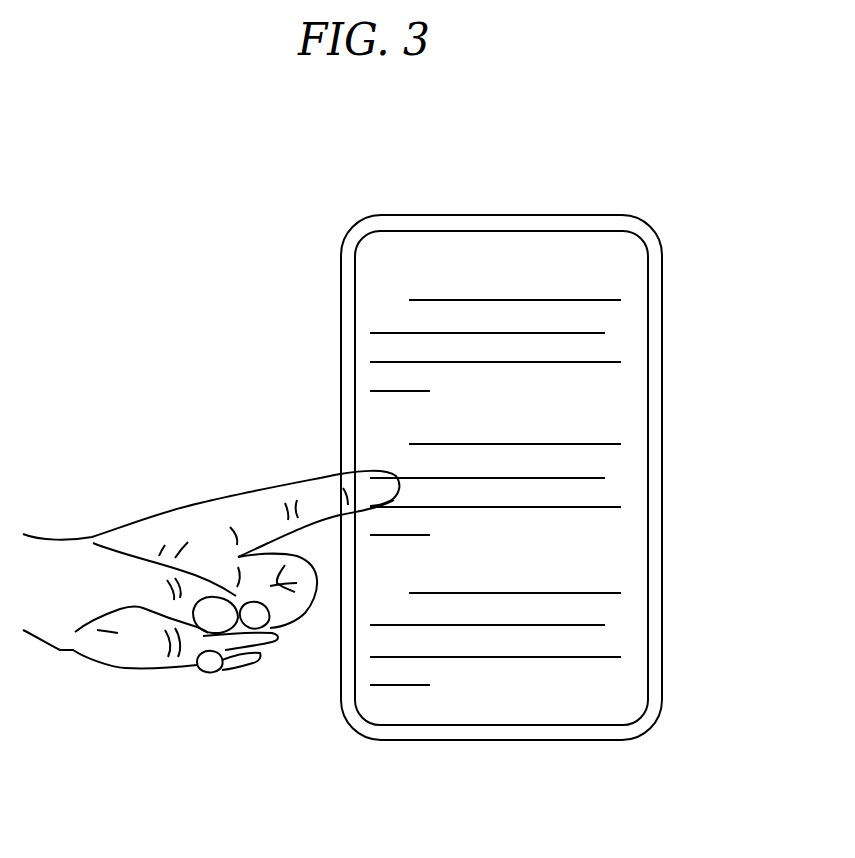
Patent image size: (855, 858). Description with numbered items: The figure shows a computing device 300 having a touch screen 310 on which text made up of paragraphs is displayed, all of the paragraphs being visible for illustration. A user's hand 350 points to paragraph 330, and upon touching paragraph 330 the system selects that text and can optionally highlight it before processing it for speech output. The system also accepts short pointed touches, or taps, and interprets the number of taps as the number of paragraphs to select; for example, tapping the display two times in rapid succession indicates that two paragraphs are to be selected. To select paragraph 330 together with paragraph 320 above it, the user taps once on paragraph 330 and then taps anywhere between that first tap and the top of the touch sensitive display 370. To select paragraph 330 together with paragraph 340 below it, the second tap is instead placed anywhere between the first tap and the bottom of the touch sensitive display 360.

The computing device 300 is at (566, 471).
The touch screen 310 is at (622, 263).
The paragraph 320 is at (620, 328).
The paragraph 330 is at (620, 476).
The paragraph 340 is at (620, 623).
The user's hand 350 is at (197, 493).
The bottom of the touch sensitive display 360 is at (509, 710).
The top of the touch sensitive display 370 is at (445, 252).